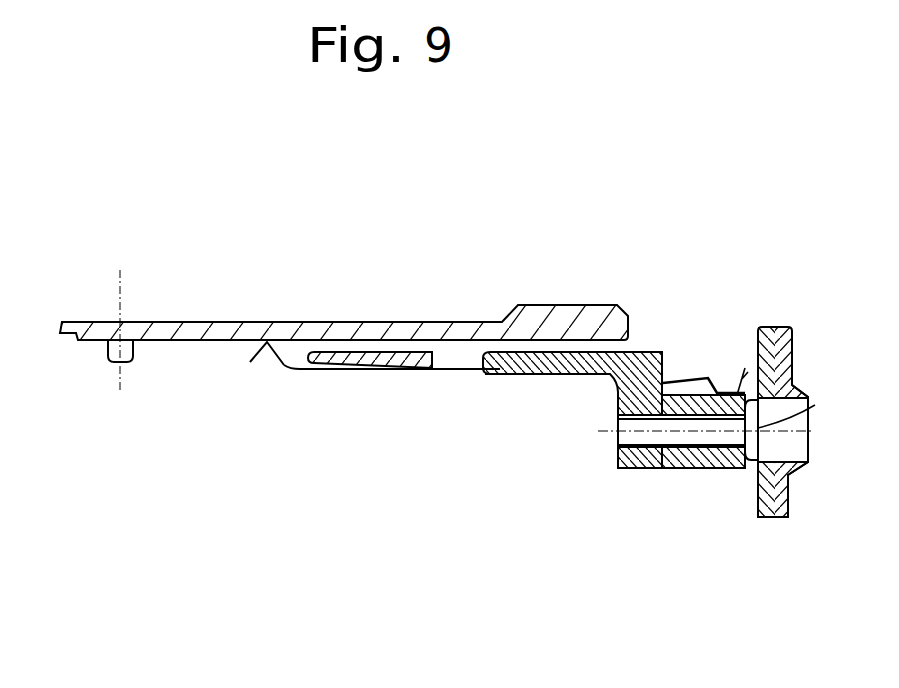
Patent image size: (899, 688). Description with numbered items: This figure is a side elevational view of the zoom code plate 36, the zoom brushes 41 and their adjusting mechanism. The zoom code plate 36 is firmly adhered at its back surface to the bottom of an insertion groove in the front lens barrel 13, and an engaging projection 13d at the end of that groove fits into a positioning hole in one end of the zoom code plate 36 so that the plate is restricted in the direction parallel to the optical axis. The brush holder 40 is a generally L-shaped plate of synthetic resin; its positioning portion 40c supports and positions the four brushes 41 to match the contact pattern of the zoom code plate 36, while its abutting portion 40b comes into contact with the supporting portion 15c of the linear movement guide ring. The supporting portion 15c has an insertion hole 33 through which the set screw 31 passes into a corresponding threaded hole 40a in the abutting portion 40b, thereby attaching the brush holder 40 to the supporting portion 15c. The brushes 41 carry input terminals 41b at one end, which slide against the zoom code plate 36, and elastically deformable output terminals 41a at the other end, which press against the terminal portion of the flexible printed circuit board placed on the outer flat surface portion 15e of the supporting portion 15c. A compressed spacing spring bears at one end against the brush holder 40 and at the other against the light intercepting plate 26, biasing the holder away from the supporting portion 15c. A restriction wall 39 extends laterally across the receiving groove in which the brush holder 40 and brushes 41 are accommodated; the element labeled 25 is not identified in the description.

The front lens barrel 13 is at (408, 322).
The engaging projection 13d is at (110, 364).
The zoom code plate 36 is at (198, 342).
The input terminals 41b is at (268, 342).
The brushes 41 is at (450, 375).
The restriction wall 39 is at (395, 368).
The brush holder 40 is at (570, 375).
The positioning portion 40c is at (502, 375).
The abutting portion 40b is at (643, 470).
The supporting portion 15c is at (693, 470).
The threaded hole 40a is at (618, 428).
The outer flat surface portion 15e is at (668, 383).
The output terminals 41a is at (745, 388).
The insertion hole 33 is at (728, 447).
The light intercepting plate 26 is at (783, 517).
The plate lower portion 25 is at (762, 517).
The set screw 31 is at (815, 405).